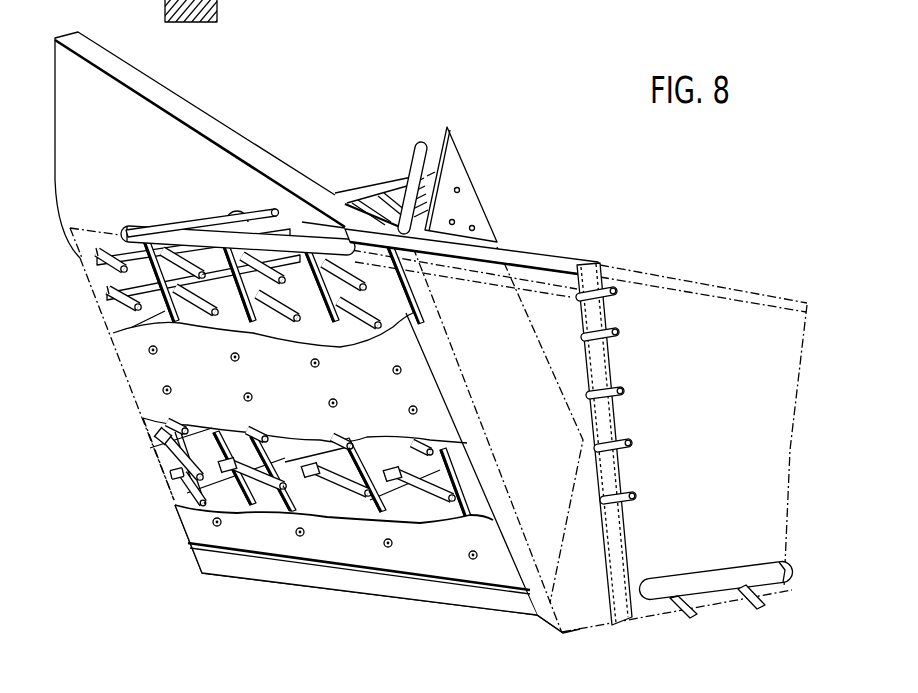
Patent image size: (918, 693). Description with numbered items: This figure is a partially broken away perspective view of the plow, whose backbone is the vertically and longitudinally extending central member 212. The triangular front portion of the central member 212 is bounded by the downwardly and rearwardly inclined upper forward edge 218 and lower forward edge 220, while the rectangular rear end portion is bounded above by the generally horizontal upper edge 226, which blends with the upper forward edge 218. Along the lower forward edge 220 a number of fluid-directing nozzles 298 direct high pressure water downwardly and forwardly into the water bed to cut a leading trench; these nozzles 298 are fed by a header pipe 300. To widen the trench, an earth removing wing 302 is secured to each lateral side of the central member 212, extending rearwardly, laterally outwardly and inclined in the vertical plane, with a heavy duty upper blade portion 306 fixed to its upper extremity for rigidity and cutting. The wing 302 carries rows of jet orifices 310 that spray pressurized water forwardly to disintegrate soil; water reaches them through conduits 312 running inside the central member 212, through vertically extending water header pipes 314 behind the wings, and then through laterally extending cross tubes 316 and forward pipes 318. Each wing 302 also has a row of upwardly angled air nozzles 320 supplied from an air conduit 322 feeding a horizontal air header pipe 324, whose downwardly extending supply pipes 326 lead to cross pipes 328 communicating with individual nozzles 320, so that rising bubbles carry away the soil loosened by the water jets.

The central member 212 is at (286, 160).
The upper horizontal edge 226 is at (316, 193).
The earth removing wing 302 is at (455, 170).
The upper forward edge 218 is at (510, 252).
The water header pipe 314 is at (238, 210).
The air header pipe 324 is at (140, 228).
The cross tube 316 is at (196, 225).
The pins 318 is at (118, 268).
The supply pipe 326 is at (114, 335).
The jet orifice 310 is at (252, 396).
The air nozzle 320 is at (238, 475).
The cross pipe 328 is at (178, 497).
The upper blade portion 306 is at (323, 577).
The air conduit 322 is at (616, 291).
The conduit 312 is at (618, 335).
The lower forward edge 220 is at (580, 630).
The header pipe 300 is at (730, 573).
The fluid-directing nozzle 298 is at (758, 609).